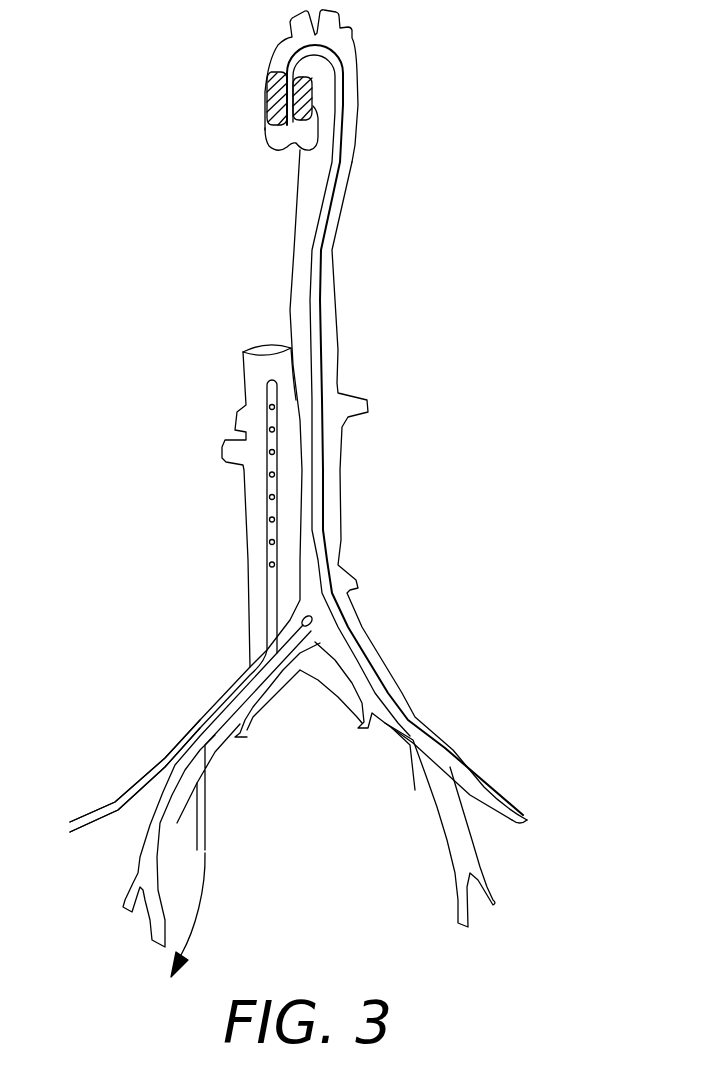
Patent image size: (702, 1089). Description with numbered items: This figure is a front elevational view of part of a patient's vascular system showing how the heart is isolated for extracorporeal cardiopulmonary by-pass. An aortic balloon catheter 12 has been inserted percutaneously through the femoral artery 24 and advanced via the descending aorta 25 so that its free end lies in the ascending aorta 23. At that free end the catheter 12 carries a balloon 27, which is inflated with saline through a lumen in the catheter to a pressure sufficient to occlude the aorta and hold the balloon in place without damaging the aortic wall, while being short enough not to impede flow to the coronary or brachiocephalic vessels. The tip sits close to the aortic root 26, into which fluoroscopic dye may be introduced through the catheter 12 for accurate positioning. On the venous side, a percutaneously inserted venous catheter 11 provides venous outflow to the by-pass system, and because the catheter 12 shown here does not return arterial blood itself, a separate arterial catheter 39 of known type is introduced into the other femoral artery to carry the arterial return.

The venous catheter 11 is at (263, 492).
The aortic balloon catheter 12 is at (318, 282).
The ascending aorta 23 is at (283, 56).
The femoral artery 24 is at (440, 719).
The descending aorta 25 is at (340, 220).
The aortic root 26 is at (277, 141).
The balloon 27 is at (277, 102).
The arterial catheter 39 is at (185, 744).